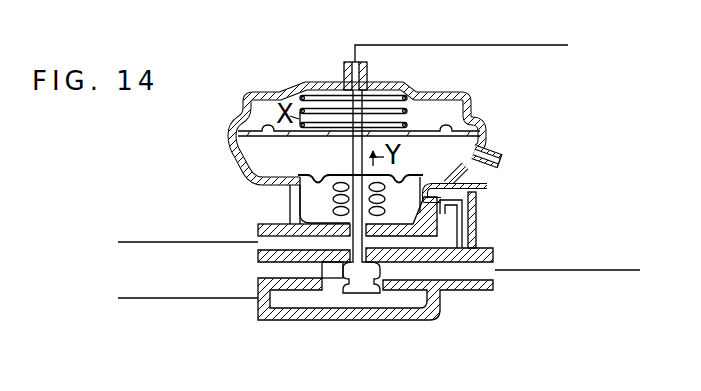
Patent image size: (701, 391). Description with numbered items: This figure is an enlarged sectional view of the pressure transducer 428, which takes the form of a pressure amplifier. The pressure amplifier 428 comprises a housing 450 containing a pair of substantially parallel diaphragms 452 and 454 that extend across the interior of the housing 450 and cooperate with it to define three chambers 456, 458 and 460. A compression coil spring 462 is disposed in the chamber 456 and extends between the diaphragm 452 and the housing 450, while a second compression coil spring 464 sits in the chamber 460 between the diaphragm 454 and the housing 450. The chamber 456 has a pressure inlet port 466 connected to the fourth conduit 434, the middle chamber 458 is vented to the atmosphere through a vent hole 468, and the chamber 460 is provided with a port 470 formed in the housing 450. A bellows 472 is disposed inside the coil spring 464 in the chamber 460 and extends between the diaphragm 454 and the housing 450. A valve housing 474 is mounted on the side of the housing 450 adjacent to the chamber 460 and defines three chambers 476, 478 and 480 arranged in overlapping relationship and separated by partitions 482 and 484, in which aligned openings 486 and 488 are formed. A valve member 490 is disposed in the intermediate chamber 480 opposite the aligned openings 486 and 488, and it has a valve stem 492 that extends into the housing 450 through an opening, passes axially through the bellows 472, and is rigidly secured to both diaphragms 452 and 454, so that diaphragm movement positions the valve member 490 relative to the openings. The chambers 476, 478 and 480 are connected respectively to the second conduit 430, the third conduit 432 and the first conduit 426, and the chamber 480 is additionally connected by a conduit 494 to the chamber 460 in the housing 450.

The first conduit 426 is at (578, 270).
The pressure transducer 428 is at (232, 96).
The second conduit 430 is at (166, 242).
The third conduit 432 is at (184, 298).
The fourth conduit 434 is at (470, 46).
The housing 450 is at (262, 181).
The diaphragm 452 is at (240, 120).
The diaphragm 454 is at (300, 212).
The chamber 456 is at (470, 102).
The chamber 458 is at (272, 152).
The chamber 460 is at (260, 226).
The compression coil spring 462 is at (288, 102).
The compression coil spring 464 is at (488, 187).
The pressure inlet port 466 is at (368, 70).
The vent hole 468 is at (500, 158).
The port 470 is at (437, 214).
The bellows 472 is at (477, 232).
The valve housing 474 is at (440, 322).
The chamber 476 is at (328, 244).
The chamber 478 is at (346, 300).
The intermediate chamber 480 is at (482, 293).
The partition 482 is at (405, 271).
The partition 484 is at (267, 292).
The opening 486 is at (332, 268).
The opening 488 is at (384, 312).
The valve member 490 is at (433, 299).
The valve stem 492 is at (352, 155).
The conduit 494 is at (463, 202).